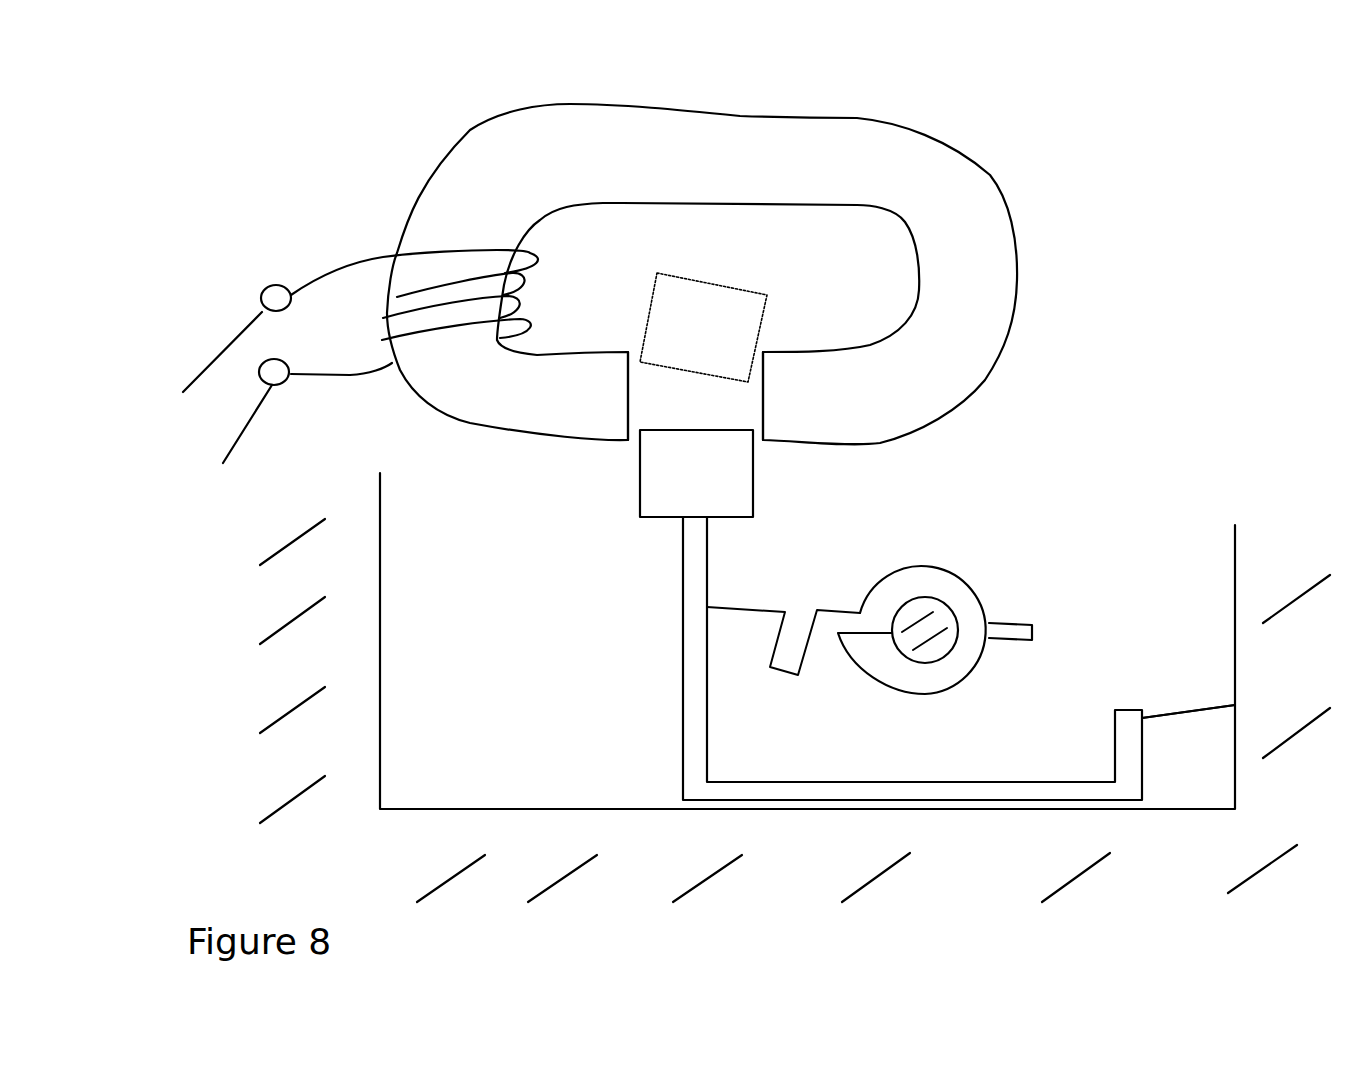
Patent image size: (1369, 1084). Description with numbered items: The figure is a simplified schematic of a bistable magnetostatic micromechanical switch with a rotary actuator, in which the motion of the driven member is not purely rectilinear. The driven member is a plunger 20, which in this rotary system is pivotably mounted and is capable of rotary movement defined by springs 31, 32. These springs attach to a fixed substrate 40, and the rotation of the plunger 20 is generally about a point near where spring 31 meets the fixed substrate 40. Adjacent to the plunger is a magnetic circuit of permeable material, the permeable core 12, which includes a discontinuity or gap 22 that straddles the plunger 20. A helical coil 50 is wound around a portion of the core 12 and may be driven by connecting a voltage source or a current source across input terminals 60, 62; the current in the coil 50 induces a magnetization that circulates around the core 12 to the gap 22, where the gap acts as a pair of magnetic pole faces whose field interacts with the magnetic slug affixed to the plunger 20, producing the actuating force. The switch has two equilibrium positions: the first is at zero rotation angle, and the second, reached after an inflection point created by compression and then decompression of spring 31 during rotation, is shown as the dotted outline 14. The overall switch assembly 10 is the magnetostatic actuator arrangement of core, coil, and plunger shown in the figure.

The toroidal vessel 10 is at (818, 417).
The gap in vessel 12 is at (597, 390).
The dielectric element 14 is at (722, 283).
The reservoir block 20 is at (673, 473).
The fluid channel 22 is at (718, 412).
The fluid level 31 is at (1158, 715).
The pump housing 32 is at (937, 692).
The fluid 40 is at (947, 602).
The coil 50 is at (348, 270).
The coil lead 60 is at (207, 366).
The coil lead 62 is at (236, 439).